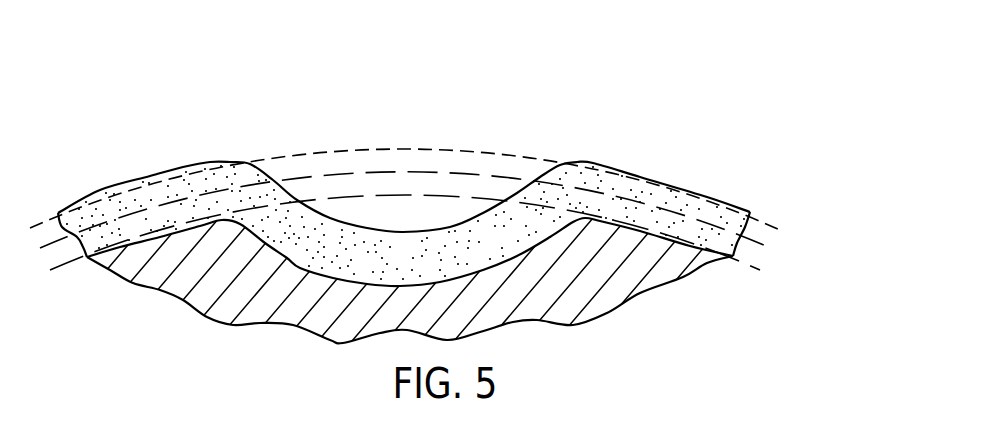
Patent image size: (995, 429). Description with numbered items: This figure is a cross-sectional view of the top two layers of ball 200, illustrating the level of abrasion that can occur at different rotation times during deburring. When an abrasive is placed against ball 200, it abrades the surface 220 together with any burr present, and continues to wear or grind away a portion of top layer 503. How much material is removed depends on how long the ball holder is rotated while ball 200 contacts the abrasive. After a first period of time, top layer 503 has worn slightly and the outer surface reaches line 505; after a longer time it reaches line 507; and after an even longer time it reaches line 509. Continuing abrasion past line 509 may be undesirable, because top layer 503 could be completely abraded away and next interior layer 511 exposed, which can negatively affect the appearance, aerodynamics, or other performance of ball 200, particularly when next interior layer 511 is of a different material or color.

The ball 200 is at (589, 119).
The surface 220 is at (667, 183).
The top layer 503 is at (228, 180).
The line 505 is at (813, 247).
The line 507 is at (786, 259).
The line 509 is at (780, 280).
The next interior layer 511 is at (622, 293).